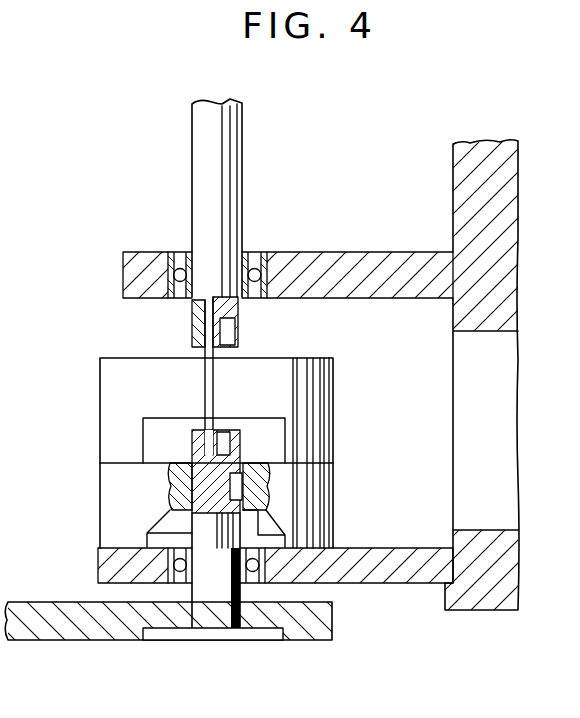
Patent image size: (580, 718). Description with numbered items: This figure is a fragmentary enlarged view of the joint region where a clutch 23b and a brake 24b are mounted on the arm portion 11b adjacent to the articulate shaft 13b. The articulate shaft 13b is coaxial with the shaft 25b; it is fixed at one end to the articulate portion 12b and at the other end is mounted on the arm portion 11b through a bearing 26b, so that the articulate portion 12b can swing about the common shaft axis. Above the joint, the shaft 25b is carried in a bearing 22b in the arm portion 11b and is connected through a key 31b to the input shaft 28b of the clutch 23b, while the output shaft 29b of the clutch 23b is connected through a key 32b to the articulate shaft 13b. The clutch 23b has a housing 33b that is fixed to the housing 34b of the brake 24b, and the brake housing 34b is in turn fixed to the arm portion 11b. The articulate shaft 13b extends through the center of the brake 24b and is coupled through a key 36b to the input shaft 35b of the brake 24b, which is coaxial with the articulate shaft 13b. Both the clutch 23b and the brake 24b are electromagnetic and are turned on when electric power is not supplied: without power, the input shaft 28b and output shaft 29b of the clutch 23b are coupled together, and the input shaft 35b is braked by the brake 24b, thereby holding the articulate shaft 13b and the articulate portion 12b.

The arm portion 11b is at (480, 608).
The articulate portion 12b is at (54, 632).
The articulate shaft 13b is at (212, 632).
The upper bearing housing 22b is at (264, 253).
The clutch 23b is at (98, 378).
The brake 24b is at (98, 490).
The shaft 25b is at (230, 171).
The bearing 26b is at (258, 590).
The input shaft 28b is at (200, 332).
The output shaft 29b is at (203, 443).
The key 31b is at (232, 330).
The key 32b is at (242, 443).
The housing 33b is at (118, 436).
The housing 34b is at (113, 519).
The input shaft 35b is at (270, 478).
The key 36b is at (268, 498).